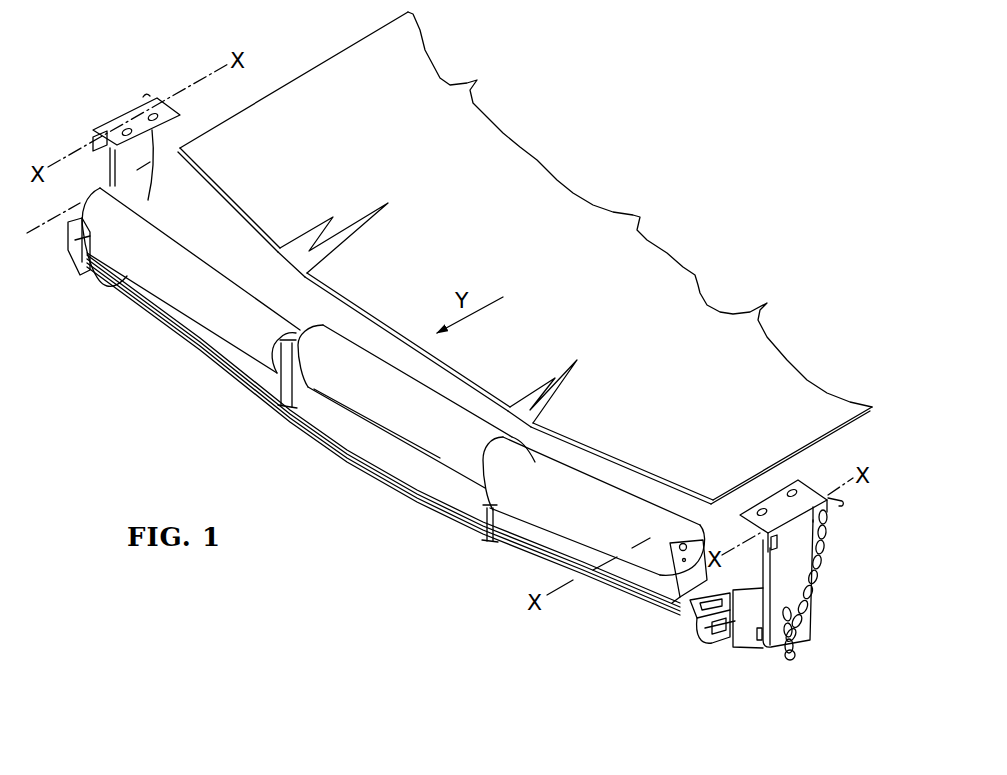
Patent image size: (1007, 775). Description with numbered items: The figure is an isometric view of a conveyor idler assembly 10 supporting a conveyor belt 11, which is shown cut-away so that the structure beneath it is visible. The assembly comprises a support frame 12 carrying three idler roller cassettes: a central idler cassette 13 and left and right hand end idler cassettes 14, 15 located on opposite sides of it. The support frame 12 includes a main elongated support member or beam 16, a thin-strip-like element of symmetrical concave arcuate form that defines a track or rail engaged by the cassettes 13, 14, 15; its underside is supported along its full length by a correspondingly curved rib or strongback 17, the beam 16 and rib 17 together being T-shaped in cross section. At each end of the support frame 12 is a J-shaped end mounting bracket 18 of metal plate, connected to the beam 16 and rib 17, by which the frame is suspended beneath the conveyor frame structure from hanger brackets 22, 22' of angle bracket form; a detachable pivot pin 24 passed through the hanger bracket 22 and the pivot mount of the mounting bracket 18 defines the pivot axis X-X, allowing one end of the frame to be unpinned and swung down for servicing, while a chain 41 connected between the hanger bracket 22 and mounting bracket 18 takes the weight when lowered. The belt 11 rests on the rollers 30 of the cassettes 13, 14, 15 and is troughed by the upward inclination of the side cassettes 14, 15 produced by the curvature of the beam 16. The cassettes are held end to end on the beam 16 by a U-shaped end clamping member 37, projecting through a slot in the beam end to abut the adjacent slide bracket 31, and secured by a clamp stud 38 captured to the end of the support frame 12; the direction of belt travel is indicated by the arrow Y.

The conveyor idler assembly 10 is at (217, 440).
The conveyor belt 11 is at (627, 180).
The support frame 12 is at (437, 517).
The central idler cassette 13 is at (347, 453).
The end idler cassette 14 is at (203, 348).
The end idler cassette 15 is at (527, 545).
The main elongated support member or beam 16 is at (613, 580).
The rib or strongback 17 is at (458, 520).
The end mounting bracket 18 is at (767, 653).
The hanger bracket 22 is at (784, 506).
The mounting bracket 22' is at (117, 145).
The pivot pin 24 is at (842, 504).
The roller 30 is at (163, 277).
The slide bracket 31 is at (673, 600).
The end clamping member 37 is at (697, 627).
The clamp stud 38 is at (728, 630).
The chain 41 is at (803, 629).